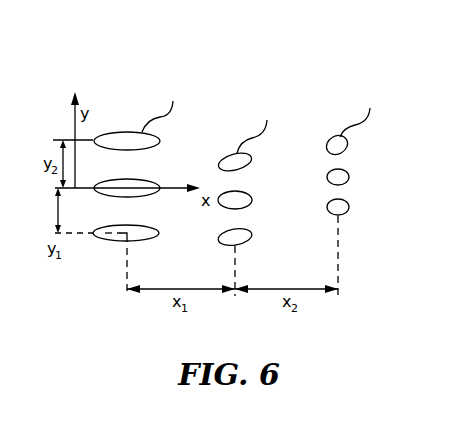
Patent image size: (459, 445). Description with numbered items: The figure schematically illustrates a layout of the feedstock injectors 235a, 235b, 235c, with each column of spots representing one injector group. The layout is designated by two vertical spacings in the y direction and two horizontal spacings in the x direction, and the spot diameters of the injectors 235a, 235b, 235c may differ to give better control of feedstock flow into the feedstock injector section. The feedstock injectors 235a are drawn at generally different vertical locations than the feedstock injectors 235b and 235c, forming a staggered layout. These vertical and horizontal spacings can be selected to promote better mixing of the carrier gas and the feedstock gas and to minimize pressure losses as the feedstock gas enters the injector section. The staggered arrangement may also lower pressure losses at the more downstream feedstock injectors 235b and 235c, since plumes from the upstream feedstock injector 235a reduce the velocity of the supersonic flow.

The feedstock injector 235a is at (130, 90).
The feedstock injector 235b is at (235, 90).
The feedstock injector 235c is at (340, 90).